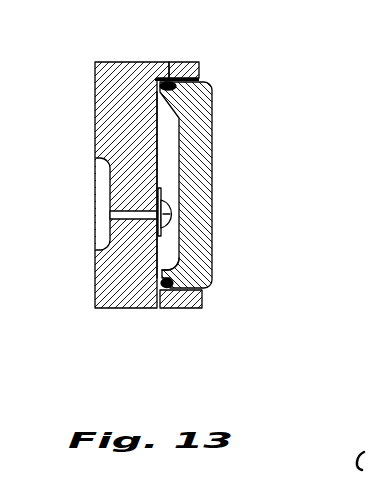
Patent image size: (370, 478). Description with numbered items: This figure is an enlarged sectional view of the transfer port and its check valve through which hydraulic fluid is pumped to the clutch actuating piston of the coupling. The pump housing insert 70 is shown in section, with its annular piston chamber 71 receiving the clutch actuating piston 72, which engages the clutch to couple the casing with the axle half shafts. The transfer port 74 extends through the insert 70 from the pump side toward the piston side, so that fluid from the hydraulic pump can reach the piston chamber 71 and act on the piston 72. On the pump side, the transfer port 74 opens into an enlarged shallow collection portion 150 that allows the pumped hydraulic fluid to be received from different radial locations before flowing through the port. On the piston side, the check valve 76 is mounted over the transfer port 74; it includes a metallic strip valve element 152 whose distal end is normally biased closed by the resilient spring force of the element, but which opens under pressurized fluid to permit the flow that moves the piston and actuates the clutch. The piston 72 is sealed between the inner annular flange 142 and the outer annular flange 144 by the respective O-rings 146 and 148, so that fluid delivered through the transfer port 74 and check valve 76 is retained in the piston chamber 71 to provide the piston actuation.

The pump housing insert 70 is at (115, 60).
The annular piston chamber 71 is at (155, 117).
The clutch actuating piston 72 is at (214, 90).
The transfer port 74 is at (121, 214).
The check valve 76 is at (172, 200).
The inner annular flange 142 is at (203, 302).
The outer annular flange 144 is at (187, 62).
The O-ring 146 is at (168, 288).
The O-ring 148 is at (172, 80).
The enlarged shallow collection portion 150 is at (95, 167).
The metallic strip valve element 152 is at (158, 242).